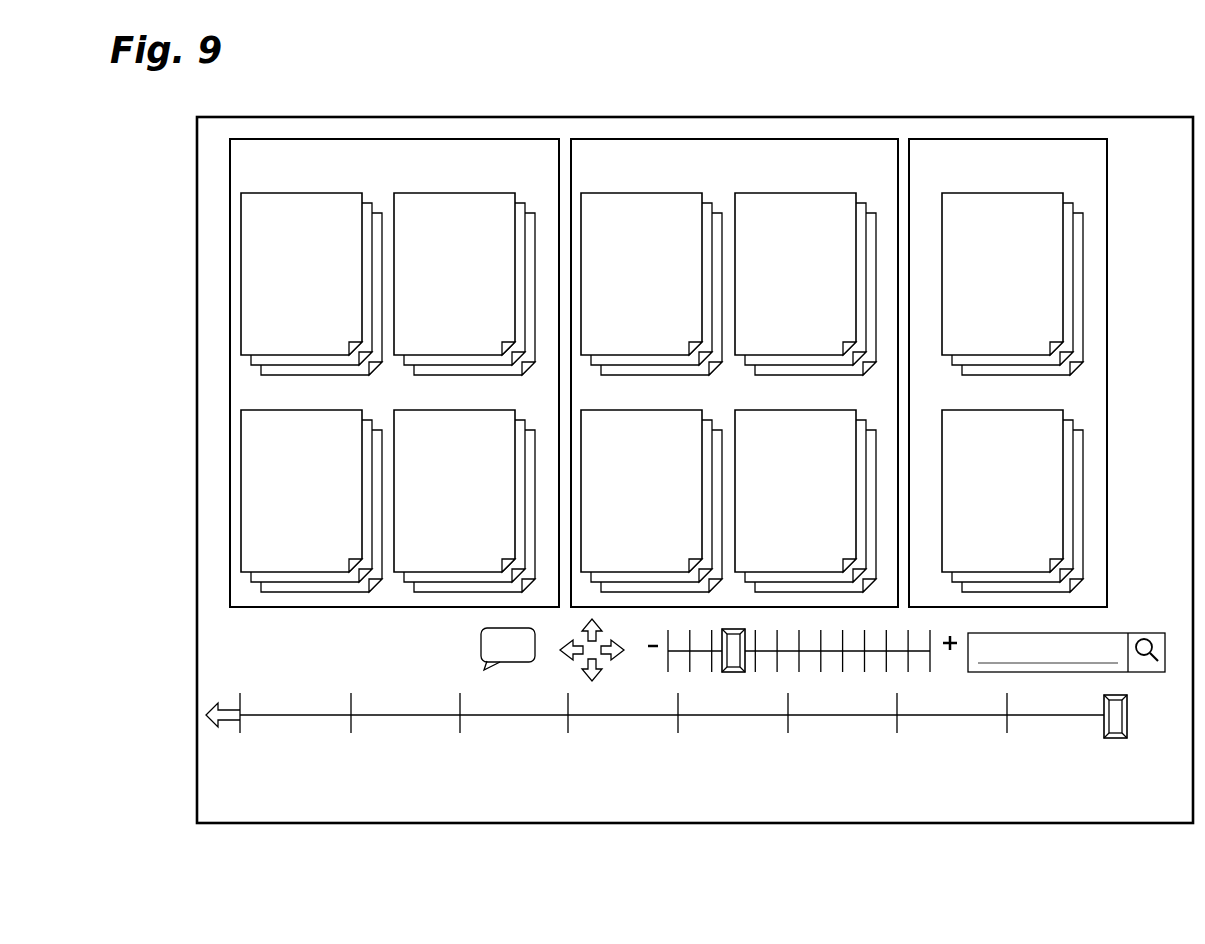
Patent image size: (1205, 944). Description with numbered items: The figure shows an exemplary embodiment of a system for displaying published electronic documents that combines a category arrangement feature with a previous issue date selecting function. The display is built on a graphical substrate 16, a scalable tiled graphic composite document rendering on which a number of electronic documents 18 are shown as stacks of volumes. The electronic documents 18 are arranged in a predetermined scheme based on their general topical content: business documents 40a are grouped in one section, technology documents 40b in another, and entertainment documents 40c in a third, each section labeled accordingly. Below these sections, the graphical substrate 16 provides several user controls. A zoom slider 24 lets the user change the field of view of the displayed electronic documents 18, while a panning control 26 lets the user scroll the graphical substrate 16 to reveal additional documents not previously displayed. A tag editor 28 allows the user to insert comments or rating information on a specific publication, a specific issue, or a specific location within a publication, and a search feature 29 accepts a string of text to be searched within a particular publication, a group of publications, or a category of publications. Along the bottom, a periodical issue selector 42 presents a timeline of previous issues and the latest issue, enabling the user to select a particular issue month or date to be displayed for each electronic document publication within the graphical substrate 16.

The graphical substrate 16 is at (223, 824).
The electronic documents 18 is at (622, 321).
The zoom slider 24 is at (678, 660).
The panning control 26 is at (560, 652).
The tag editor 28 is at (481, 644).
The search feature 29 is at (985, 656).
The business documents 40a is at (228, 107).
The technology documents 40b is at (898, 107).
The entertainment documents 40c is at (1108, 107).
The periodical issue selector 42 is at (1067, 716).